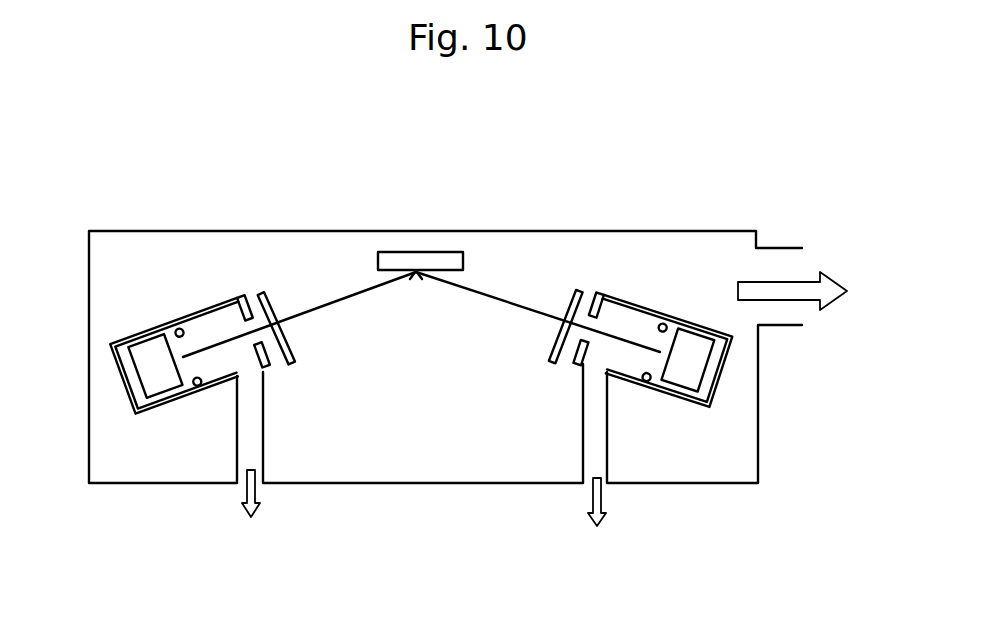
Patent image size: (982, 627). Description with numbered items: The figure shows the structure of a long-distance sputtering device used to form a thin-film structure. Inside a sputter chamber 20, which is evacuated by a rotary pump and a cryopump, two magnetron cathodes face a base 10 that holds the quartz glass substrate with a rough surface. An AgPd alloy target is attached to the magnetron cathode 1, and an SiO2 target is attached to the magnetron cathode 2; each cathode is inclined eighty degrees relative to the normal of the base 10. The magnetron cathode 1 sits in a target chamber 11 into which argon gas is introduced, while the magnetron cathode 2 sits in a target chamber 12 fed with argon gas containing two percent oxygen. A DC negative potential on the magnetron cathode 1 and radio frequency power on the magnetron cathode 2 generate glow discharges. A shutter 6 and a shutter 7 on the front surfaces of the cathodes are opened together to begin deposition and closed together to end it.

The magnetron cathode 1 is at (697, 372).
The magnetron cathode 2 is at (160, 382).
The shutter 6 is at (575, 307).
The shutter 7 is at (278, 307).
The base 10 is at (440, 257).
The target chamber 11 is at (623, 305).
The target chamber 12 is at (217, 307).
The sputter chamber 20 is at (407, 468).